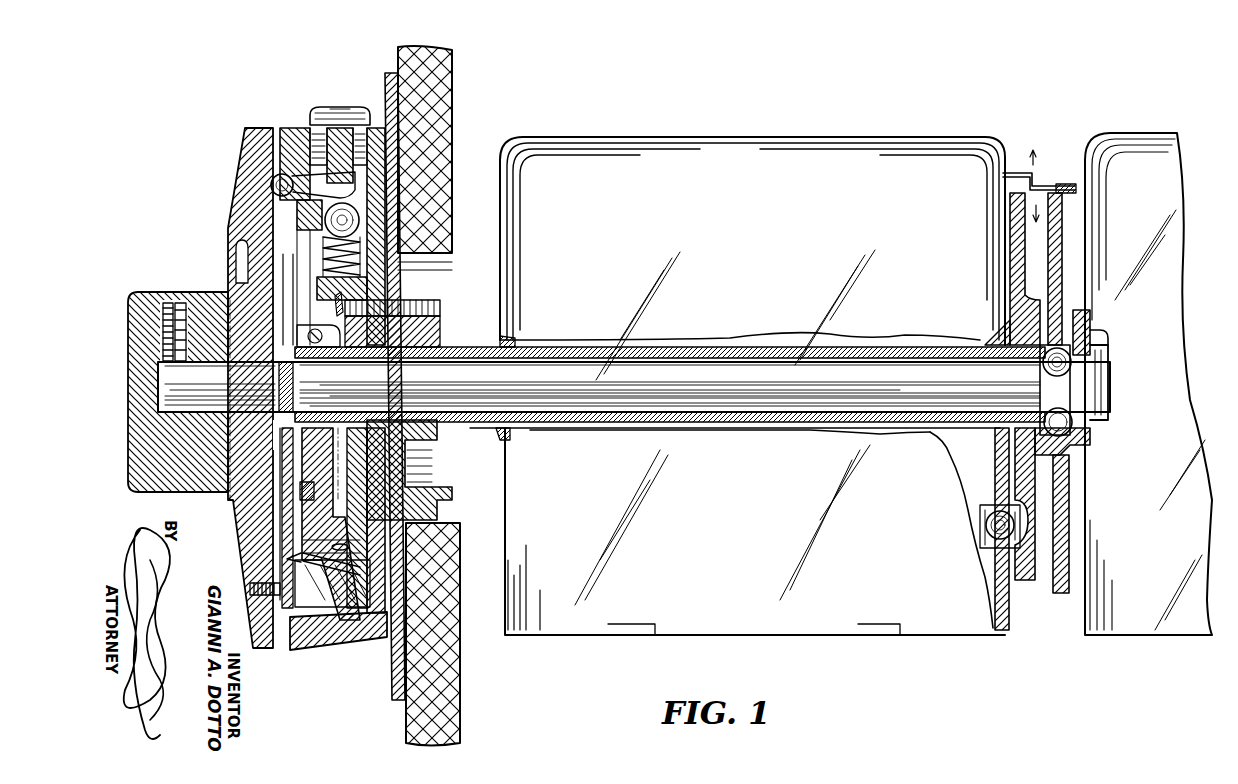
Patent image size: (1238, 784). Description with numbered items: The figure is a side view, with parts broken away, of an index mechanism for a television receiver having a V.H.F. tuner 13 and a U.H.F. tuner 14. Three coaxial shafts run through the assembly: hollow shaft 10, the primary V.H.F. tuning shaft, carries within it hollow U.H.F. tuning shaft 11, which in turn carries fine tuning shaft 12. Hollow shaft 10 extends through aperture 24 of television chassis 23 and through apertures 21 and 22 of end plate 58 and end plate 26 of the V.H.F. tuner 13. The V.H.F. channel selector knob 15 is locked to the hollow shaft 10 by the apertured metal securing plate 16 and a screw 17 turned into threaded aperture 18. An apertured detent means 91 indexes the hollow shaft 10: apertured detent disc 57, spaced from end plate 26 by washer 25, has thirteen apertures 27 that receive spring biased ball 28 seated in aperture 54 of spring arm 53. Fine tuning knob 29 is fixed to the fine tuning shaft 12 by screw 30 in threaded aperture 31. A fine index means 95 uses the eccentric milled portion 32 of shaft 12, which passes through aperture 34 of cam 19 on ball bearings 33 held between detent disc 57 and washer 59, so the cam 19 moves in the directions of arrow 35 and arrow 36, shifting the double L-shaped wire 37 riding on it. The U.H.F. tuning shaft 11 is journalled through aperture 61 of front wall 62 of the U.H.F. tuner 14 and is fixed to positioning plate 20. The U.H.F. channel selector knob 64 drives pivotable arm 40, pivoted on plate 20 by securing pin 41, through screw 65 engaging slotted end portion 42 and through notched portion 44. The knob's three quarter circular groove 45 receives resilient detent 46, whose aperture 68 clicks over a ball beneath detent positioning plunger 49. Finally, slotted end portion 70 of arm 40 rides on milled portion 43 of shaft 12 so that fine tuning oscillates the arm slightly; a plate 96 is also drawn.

The hollow shaft 10 is at (482, 360).
The hollow U.H.F. tuning shaft 11 is at (486, 422).
The fine tuning shaft 12 is at (492, 358).
The V.H.F. tuner 13 is at (645, 148).
The U.H.F. tuner 14 is at (1128, 140).
The V.H.F. channel selector knob 15 is at (365, 125).
The apertured metal securing plate 16 is at (336, 292).
The screw 17 is at (335, 305).
The threaded aperture 18 is at (440, 310).
The cam 19 is at (1055, 192).
The positioning plate 20 is at (310, 448).
The aperture 21 is at (515, 340).
The aperture 22 is at (990, 335).
The television chassis 23 is at (445, 178).
The aperture 24 is at (452, 494).
The washer 25 is at (1010, 315).
The end plate 26 is at (994, 445).
The apertures 27 is at (1028, 530).
The spring biased ball 28 is at (985, 540).
The fine tuning knob 29 is at (140, 468).
The screw 30 is at (168, 300).
The threaded aperture 31 is at (182, 300).
The portion 32 is at (1046, 388).
The ball bearings 33 is at (1058, 422).
The aperture 34 is at (1045, 460).
The arrow 35 is at (1039, 152).
The arrow 36 is at (1038, 226).
The double L-shaped wire 37 is at (1067, 177).
The pivotable arm 40 is at (250, 547).
The securing pin 41 is at (314, 486).
The slotted end portion 42 is at (337, 594).
The portion 43 is at (293, 398).
The notched portion 44 is at (305, 560).
The three quarter circular groove 45 is at (270, 178).
The resilient detent 46 is at (272, 190).
The detent positioning plunger 49 is at (332, 108).
The spring arm 53 is at (992, 505).
The aperture 54 is at (982, 510).
The apertured detent disc 57 is at (1058, 588).
The end plate 58 is at (500, 440).
The washer 59 is at (1082, 315).
The aperture 61 is at (1108, 348).
The front wall 62 is at (1100, 332).
The U.H.F. channel selector knob 64 is at (245, 138).
The screw 65 is at (250, 589).
The aperture 68 is at (340, 545).
The slotted end portion 70 is at (298, 345).
The apertured detent means 91 is at (1012, 590).
The fine index means 95 is at (1072, 157).
The plate 96 is at (330, 495).